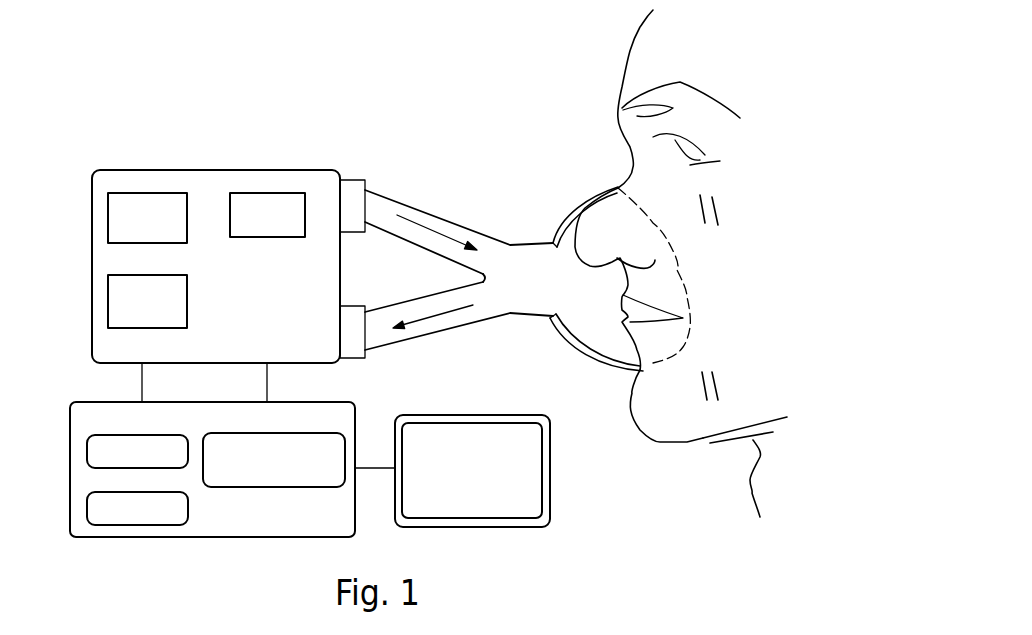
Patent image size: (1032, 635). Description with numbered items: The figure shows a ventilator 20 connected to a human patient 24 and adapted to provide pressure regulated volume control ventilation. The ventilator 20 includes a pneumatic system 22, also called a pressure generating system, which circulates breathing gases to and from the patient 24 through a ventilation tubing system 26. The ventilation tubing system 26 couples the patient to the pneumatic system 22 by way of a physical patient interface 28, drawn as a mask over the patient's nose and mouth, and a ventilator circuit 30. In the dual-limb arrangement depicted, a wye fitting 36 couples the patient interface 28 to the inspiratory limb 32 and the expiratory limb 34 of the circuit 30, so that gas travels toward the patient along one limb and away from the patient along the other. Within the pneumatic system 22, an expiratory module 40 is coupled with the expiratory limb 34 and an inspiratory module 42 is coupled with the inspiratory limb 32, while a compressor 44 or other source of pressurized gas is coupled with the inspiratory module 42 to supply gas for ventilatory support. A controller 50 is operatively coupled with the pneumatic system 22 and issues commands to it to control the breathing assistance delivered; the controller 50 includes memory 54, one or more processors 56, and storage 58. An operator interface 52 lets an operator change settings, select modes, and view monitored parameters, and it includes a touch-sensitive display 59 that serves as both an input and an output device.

The ventilator 20 is at (450, 76).
The pneumatic system 22 is at (212, 170).
The human patient 24 is at (623, 77).
The ventilation tubing system 26 is at (527, 186).
The patient interface 28 is at (580, 201).
The ventilator circuit 30 is at (459, 264).
The inspiratory limb 32 is at (410, 245).
The expiratory limb 34 is at (418, 338).
The wye fitting 36 is at (480, 277).
The expiratory module 40 is at (160, 328).
The inspiratory module 42 is at (160, 243).
The compressor 44 is at (271, 238).
The controller 50 is at (232, 488).
The operator interface 52 is at (580, 556).
The memory 54 is at (140, 468).
The processor 56 is at (298, 488).
The storage 58 is at (188, 507).
The display 59 is at (470, 527).